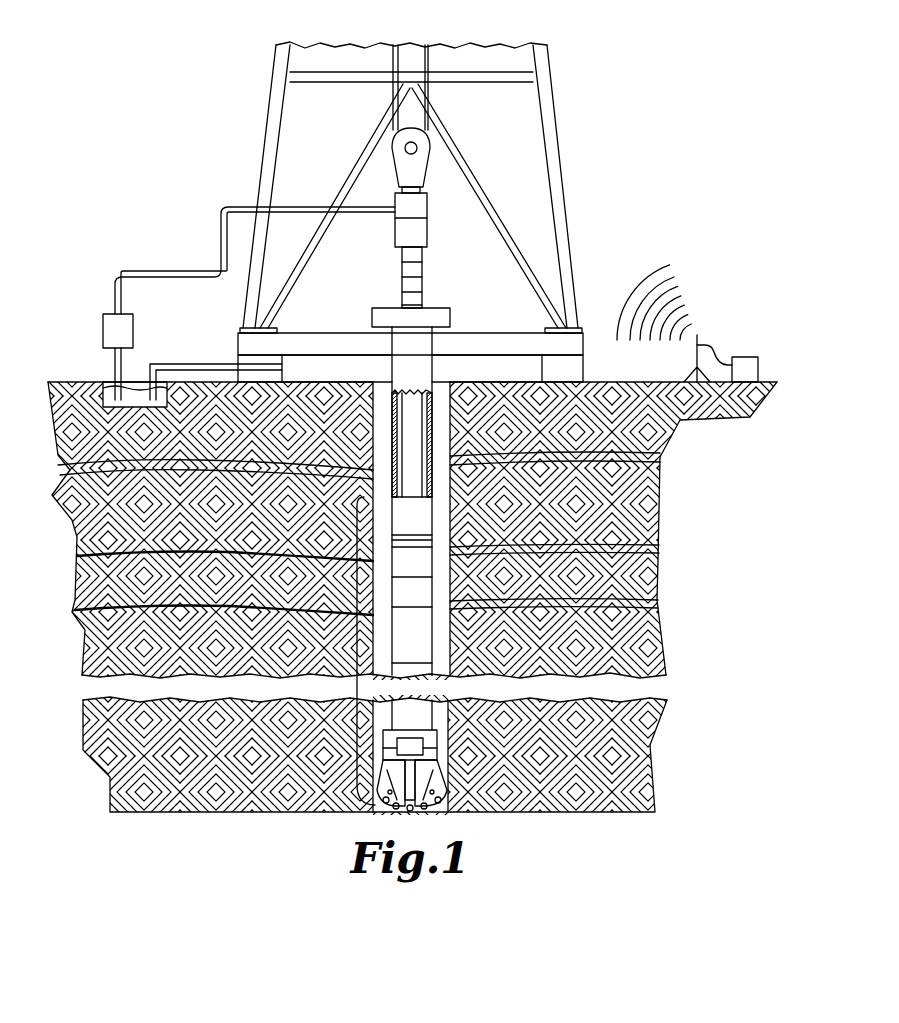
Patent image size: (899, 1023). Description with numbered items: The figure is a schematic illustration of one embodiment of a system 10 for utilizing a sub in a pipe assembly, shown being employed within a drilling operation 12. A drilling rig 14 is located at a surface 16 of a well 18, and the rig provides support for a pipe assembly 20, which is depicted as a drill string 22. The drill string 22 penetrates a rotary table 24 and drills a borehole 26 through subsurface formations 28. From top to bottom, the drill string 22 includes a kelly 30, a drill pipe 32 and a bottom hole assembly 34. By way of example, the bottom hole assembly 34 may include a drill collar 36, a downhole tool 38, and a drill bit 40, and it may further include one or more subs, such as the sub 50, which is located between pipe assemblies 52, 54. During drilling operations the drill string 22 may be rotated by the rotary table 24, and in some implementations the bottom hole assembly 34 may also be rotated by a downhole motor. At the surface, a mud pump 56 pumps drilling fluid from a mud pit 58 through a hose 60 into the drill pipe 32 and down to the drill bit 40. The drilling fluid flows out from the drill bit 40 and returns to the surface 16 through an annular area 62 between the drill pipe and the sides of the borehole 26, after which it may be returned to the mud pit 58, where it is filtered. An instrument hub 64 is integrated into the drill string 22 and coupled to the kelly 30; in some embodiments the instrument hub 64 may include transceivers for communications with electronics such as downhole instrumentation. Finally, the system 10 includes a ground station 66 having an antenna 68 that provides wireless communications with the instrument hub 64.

The system 10 is at (170, 97).
The drilling operation 12 is at (128, 215).
The drilling rig 14 is at (560, 200).
The surface 16 is at (618, 381).
The well 18 is at (453, 513).
The pipe assembly 20 is at (436, 403).
The drill string 22 is at (392, 402).
The rotary table 24 is at (372, 320).
The borehole 26 is at (443, 422).
The subsurface formations 28 is at (672, 463).
The kelly 30 is at (402, 285).
The drill pipe 32 is at (415, 478).
The bottom hole assembly 34 is at (354, 655).
The drill collar 36 is at (425, 598).
The downhole tool 38 is at (425, 638).
The drill bit 40 is at (437, 778).
The sub 50 is at (425, 542).
The pipe assembly 52 is at (397, 523).
The pipe assembly 54 is at (397, 560).
The mud pump 56 is at (103, 333).
The mud pit 58 is at (125, 410).
The hose 60 is at (240, 206).
The annular area 62 is at (378, 438).
The instrument hub 64 is at (422, 298).
The ground station 66 is at (758, 370).
The antenna 68 is at (700, 337).